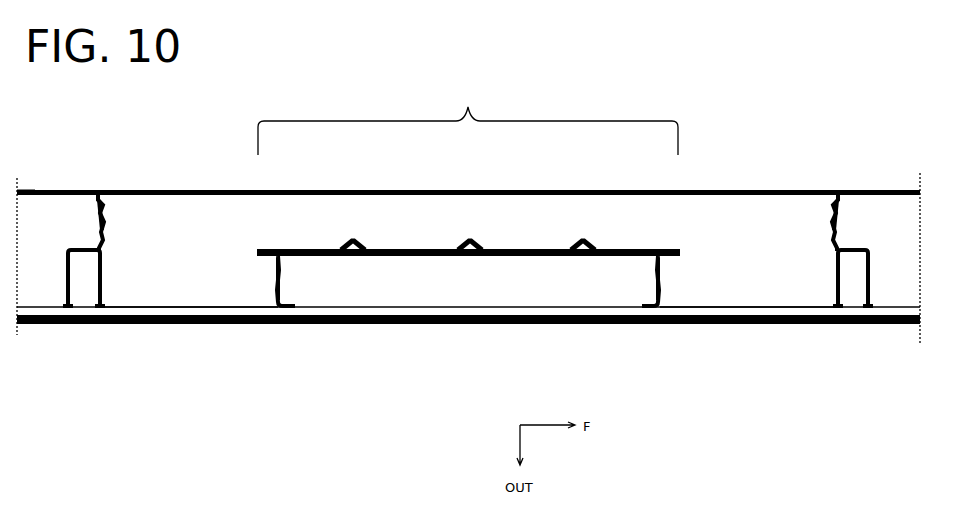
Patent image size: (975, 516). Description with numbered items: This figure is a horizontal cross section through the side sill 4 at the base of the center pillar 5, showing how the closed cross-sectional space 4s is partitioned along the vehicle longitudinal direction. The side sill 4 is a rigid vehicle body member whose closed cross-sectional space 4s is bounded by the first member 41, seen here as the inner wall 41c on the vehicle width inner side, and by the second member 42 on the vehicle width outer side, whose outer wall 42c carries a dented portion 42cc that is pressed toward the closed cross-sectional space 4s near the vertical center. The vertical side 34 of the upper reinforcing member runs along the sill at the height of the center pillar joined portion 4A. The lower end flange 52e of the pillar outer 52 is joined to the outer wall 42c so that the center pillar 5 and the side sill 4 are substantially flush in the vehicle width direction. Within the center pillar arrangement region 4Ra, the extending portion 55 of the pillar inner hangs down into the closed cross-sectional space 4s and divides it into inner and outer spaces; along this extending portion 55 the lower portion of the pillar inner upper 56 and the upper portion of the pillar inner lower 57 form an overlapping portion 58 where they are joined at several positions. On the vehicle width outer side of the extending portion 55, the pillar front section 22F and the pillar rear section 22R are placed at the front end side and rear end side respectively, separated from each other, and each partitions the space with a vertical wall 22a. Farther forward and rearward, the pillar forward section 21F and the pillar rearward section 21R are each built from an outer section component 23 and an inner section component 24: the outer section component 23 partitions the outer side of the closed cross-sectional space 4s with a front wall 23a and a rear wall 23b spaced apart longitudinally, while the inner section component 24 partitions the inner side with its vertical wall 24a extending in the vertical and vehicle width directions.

The side sill 4 is at (138, 333).
The center pillar arrangement region 4Ra is at (468, 107).
The first member 41 is at (153, 190).
The inner wall 41c is at (35, 197).
The closed cross-sectional space 4s is at (218, 229).
The vertical side 34 is at (235, 310).
The second member 42 is at (187, 325).
The dented portion 42cc is at (166, 307).
The outer wall 42c is at (762, 326).
The center pillar joined portion 4A is at (403, 334).
The pillar outer 52 is at (632, 336).
The lower end flange 52e is at (541, 327).
The vertical wall 24a is at (97, 226).
The inner section component 24 is at (121, 231).
The pillar rearward section 21R is at (150, 230).
The pillar forward section 21F is at (787, 228).
The outer section component 23 is at (124, 277).
The rear wall 23b is at (66, 283).
The front wall 23a is at (100, 293).
The center pillar 5 is at (664, 234).
The extending portion 55 is at (537, 234).
The pillar inner upper 56 is at (628, 250).
The overlapping portion 58 is at (419, 242).
The pillar inner lower 57 is at (412, 258).
The pillar rear section 22R is at (262, 285).
The pillar front section 22F is at (677, 286).
The vertical wall 22a is at (283, 284).